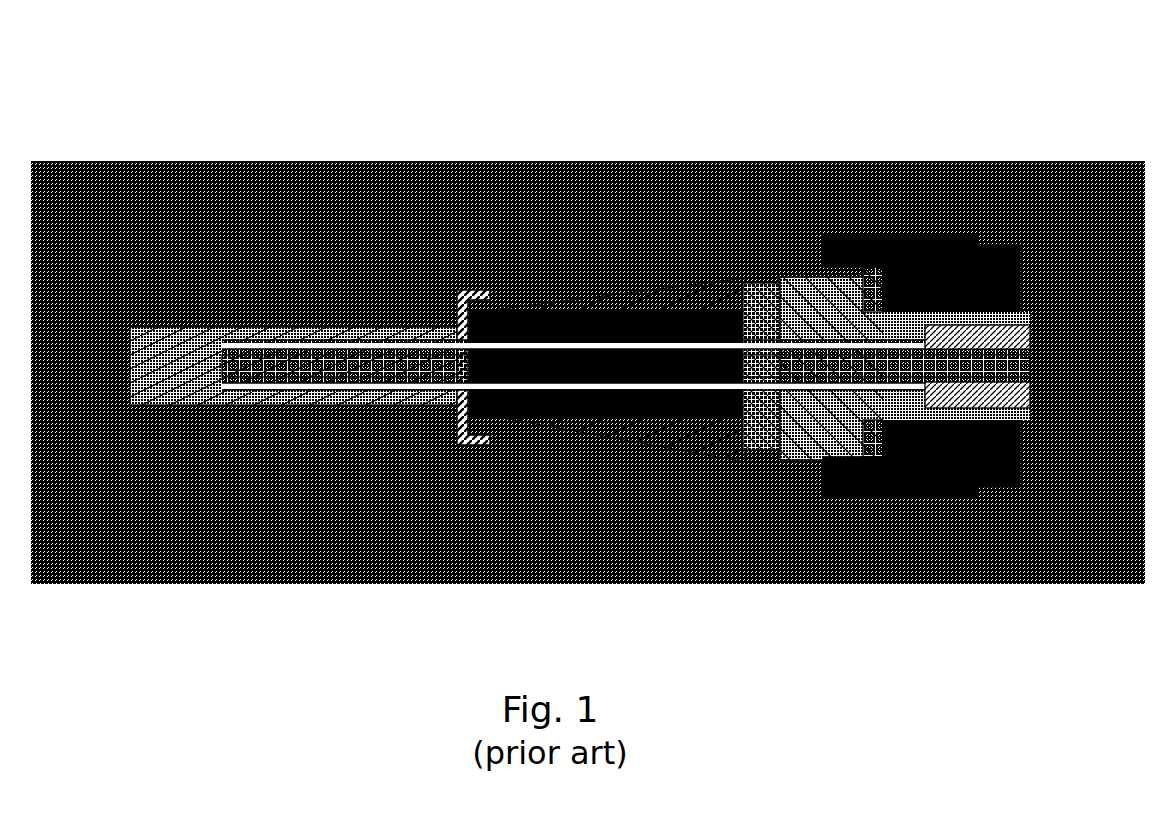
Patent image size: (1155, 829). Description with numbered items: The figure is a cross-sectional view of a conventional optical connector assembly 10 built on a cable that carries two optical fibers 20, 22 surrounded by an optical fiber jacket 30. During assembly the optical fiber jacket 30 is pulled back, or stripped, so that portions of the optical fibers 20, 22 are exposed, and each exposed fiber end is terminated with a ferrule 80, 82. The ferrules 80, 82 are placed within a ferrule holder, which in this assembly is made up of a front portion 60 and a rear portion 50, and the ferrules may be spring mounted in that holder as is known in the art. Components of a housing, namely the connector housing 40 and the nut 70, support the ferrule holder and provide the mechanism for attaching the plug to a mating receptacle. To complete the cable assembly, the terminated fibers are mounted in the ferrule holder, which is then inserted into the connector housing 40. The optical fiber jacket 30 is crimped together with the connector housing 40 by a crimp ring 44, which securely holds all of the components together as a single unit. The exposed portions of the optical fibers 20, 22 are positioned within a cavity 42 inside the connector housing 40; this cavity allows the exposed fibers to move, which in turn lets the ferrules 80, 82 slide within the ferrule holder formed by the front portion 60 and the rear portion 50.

The optical connector assembly 10 is at (391, 67).
The optical fiber 20 is at (375, 343).
The optical fiber 22 is at (347, 388).
The optical fiber jacket 30 is at (183, 352).
The connector housing 40 is at (632, 303).
The cavity 42 is at (568, 332).
The crimp ring 44 is at (475, 288).
The rear portion of ferrule holder 50 is at (757, 295).
The front portion of ferrule holder 60 is at (815, 293).
The nut 70 is at (958, 236).
The ferrule 80 is at (950, 337).
The ferrule 82 is at (960, 403).